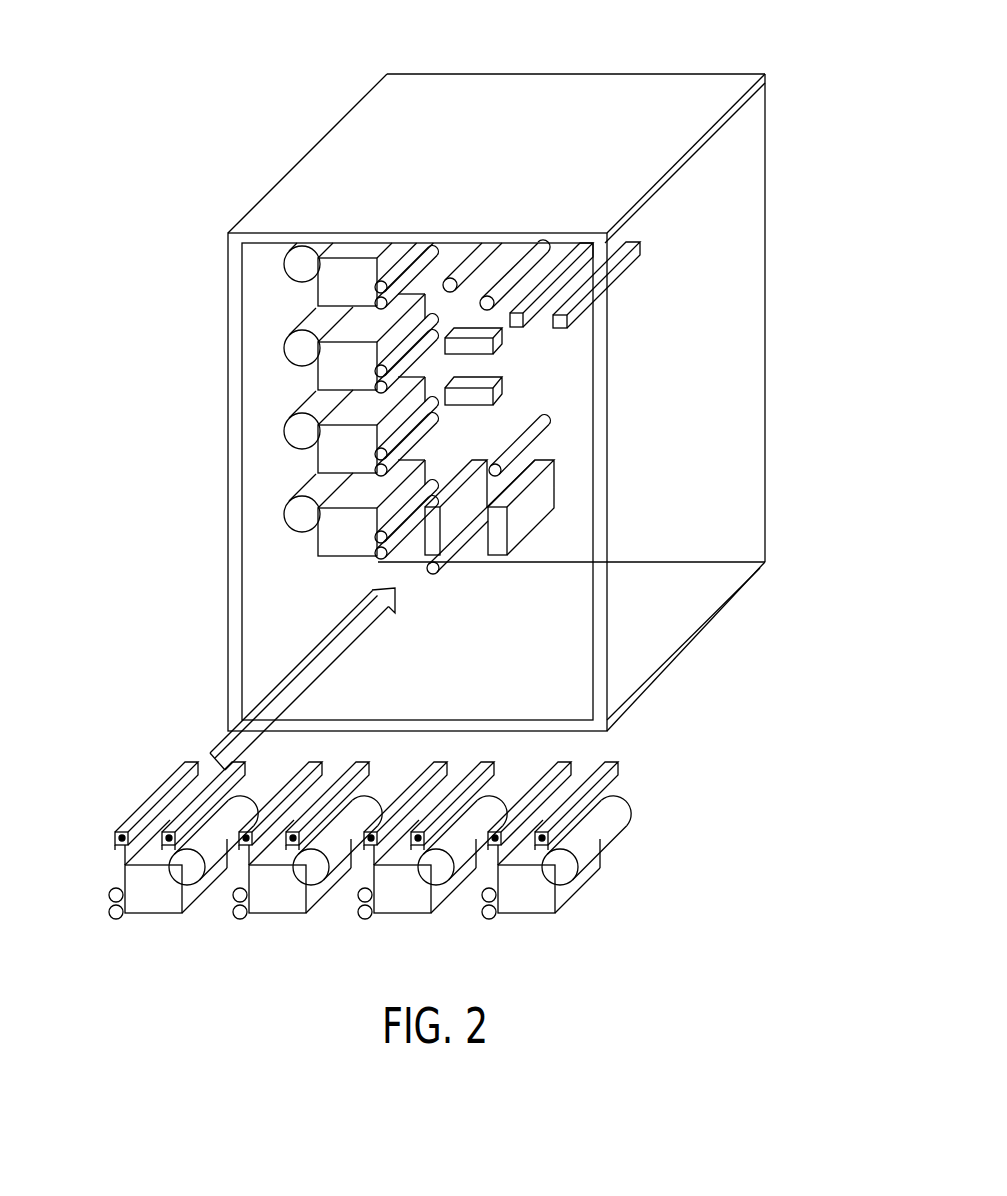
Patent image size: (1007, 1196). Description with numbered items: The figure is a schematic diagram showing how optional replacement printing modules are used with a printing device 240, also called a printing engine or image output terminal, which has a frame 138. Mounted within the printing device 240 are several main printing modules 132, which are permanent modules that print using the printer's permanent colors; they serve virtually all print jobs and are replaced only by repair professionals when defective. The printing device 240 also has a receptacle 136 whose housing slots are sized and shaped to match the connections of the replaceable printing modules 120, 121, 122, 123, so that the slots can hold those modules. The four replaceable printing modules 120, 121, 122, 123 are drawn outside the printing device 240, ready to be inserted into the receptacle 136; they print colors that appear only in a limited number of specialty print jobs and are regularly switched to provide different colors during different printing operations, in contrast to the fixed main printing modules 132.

The printing device 240 is at (476, 118).
The frame 138 is at (244, 228).
The receptacle 136 is at (584, 292).
The main printing module 132 is at (335, 282).
The replaceable printing module 120 is at (154, 900).
The replaceable printing module 121 is at (272, 900).
The replaceable printing module 122 is at (400, 900).
The replaceable printing module 123 is at (519, 900).